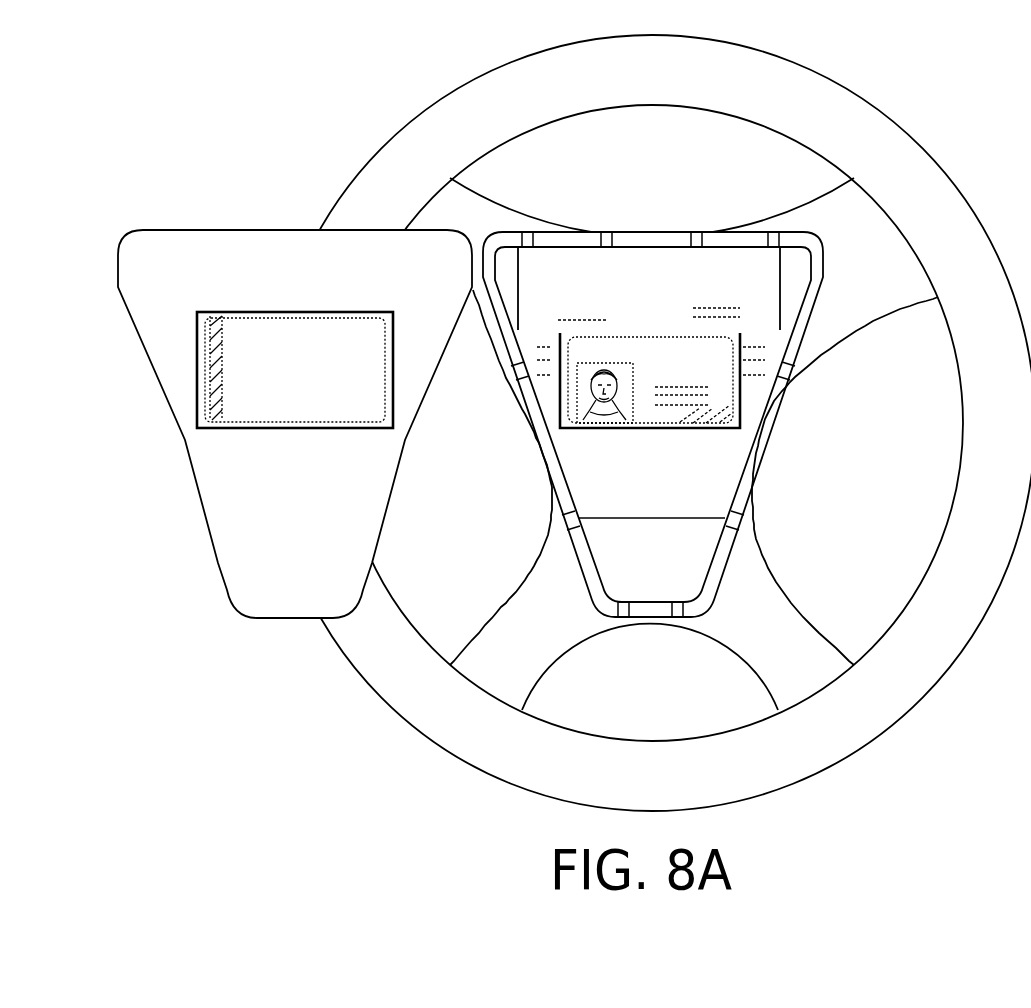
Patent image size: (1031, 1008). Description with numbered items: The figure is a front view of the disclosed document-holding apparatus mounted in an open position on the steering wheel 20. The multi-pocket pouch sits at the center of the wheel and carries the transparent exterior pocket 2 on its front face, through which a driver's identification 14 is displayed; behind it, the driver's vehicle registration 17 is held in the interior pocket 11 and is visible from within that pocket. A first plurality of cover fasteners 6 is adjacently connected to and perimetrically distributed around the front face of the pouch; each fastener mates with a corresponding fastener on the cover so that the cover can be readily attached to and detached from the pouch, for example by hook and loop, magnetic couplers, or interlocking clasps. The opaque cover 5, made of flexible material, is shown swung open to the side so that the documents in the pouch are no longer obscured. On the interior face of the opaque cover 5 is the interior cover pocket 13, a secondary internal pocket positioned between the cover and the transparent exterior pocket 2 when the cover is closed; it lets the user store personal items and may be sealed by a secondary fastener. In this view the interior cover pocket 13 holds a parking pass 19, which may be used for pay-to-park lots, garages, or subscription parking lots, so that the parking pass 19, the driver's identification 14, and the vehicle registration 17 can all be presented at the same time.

The transparent exterior pocket 2 is at (727, 430).
The opaque cover 5 is at (185, 230).
The first plurality of cover fasteners 6 is at (550, 232).
The interior pocket 11 is at (530, 337).
The interior cover pocket 13 is at (197, 430).
The driver's identification 14 is at (633, 422).
The vehicle registration 17 is at (692, 250).
The parking pass 19 is at (358, 312).
The steering wheel 20 is at (862, 730).